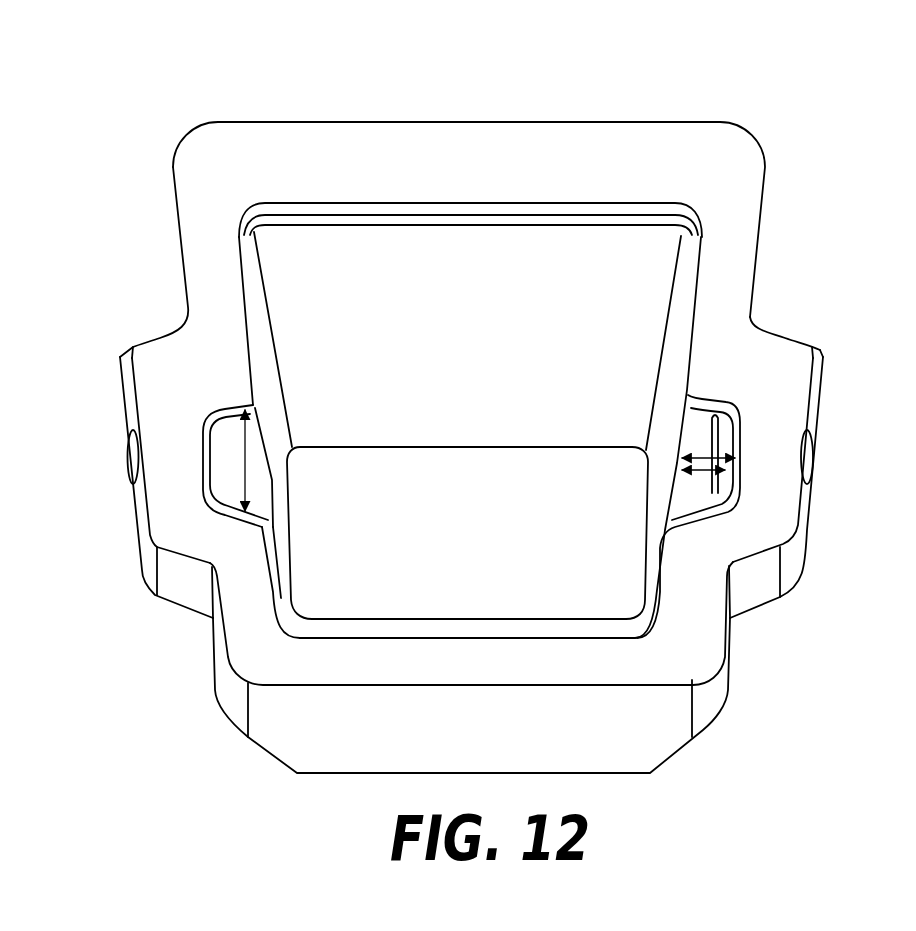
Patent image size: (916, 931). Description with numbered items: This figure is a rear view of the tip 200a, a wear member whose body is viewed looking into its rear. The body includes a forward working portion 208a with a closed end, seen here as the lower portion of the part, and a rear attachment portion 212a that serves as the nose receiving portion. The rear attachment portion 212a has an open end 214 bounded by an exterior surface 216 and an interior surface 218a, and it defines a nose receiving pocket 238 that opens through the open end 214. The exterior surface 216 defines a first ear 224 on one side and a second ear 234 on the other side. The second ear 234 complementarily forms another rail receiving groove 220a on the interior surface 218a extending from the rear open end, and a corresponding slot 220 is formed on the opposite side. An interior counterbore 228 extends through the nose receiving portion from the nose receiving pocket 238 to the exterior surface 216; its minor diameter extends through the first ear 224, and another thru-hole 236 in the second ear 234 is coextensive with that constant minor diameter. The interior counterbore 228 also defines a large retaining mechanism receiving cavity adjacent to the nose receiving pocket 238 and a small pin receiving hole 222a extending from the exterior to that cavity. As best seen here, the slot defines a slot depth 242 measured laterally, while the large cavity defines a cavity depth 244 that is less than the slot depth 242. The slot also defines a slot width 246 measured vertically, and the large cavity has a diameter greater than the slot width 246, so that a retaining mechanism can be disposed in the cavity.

The tip 200a is at (471, 414).
The rear attachment portion 212a is at (762, 243).
The open end 214 is at (686, 304).
The exterior surface 216 is at (757, 322).
The interior surface 218a is at (684, 359).
The rail receiving groove 220a is at (229, 458).
The right slot 220 is at (701, 434).
The small pin receiving hole 222a is at (817, 452).
The first ear 224 is at (803, 529).
The interior counterbore 228 is at (719, 490).
The second ear 234 is at (146, 559).
The thru-hole 236 is at (125, 452).
The nose receiving pocket 238 is at (432, 487).
The slot depth 242 is at (712, 457).
The cavity depth 244 is at (708, 473).
The slot width 246 is at (246, 470).
The forward working portion 208a is at (698, 736).